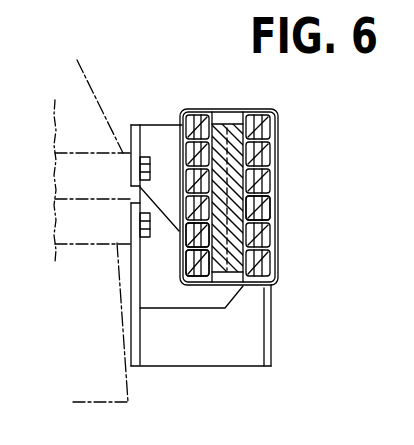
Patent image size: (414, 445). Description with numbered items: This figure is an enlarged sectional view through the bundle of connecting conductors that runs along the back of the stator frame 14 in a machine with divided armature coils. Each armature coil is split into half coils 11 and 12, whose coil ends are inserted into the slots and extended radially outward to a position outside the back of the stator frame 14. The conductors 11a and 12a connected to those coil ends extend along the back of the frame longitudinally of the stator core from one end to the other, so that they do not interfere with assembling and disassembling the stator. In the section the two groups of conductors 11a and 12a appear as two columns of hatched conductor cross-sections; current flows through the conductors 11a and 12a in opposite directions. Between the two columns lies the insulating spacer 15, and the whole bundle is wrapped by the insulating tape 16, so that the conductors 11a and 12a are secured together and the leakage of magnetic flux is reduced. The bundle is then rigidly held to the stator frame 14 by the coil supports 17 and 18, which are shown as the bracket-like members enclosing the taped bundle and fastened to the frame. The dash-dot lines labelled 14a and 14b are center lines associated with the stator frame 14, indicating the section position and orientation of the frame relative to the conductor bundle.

The half coil 11 is at (273, 155).
The connecting conductor 11a is at (270, 218).
The half coil 12 is at (182, 258).
The connecting conductor 12a is at (202, 272).
The stator frame 14 is at (85, 70).
The cable center line 14a is at (82, 100).
The cable center line 14b is at (115, 382).
The insulating spacer 15 is at (227, 123).
The insulating tape 16 is at (280, 168).
The coil support 17 is at (153, 126).
The coil support 18 is at (273, 328).